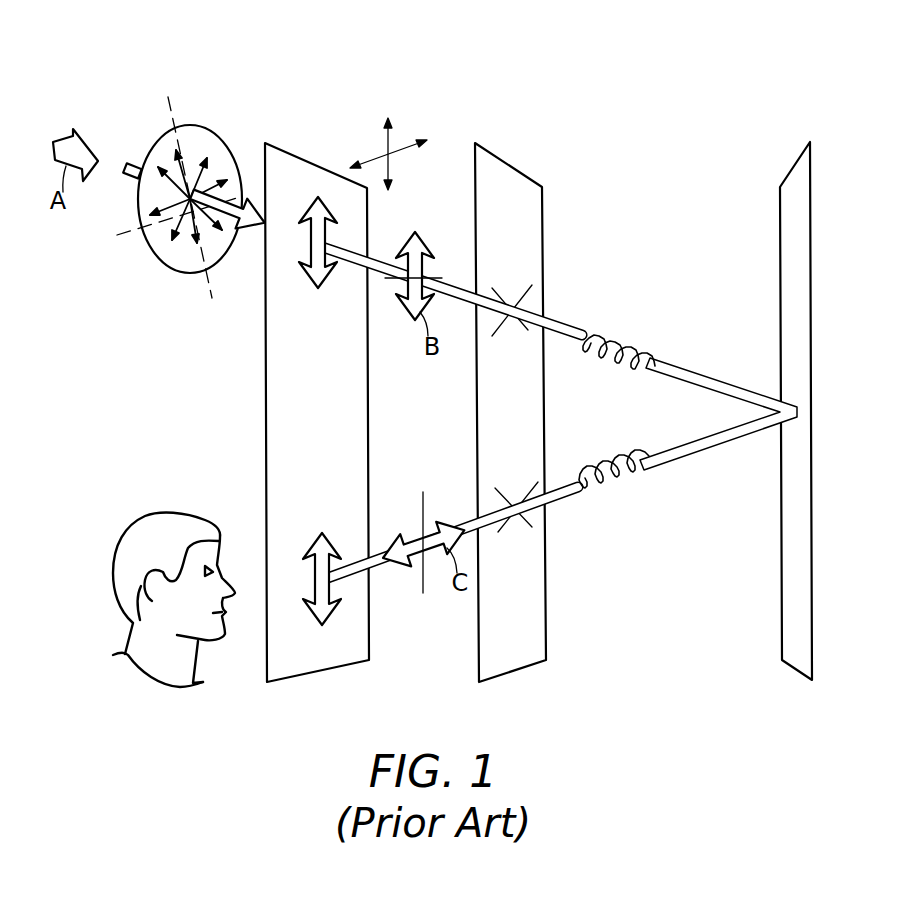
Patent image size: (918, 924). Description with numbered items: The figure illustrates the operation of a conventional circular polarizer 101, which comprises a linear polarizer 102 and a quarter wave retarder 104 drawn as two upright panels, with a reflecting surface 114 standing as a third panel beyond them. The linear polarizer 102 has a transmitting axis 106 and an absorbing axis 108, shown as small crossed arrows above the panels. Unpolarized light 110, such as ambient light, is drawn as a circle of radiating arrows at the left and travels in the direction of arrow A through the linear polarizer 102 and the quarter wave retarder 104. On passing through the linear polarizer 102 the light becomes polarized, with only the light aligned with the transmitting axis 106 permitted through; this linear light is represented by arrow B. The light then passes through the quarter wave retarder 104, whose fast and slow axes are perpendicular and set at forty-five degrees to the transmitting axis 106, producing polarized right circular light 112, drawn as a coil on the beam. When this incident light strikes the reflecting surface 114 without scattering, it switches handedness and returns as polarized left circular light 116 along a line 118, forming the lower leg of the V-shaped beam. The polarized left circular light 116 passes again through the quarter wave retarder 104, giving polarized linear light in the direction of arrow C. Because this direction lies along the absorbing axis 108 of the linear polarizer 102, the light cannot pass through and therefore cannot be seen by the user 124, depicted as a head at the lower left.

The circular polarizer 101 is at (744, 80).
The linear polarizer 102 is at (327, 660).
The quarter wave retarder 104 is at (512, 660).
The transmitting axis 106 is at (392, 170).
The absorbing axis 108 is at (378, 163).
The unpolarized light 110 is at (213, 131).
The polarized right circular light 112 is at (618, 334).
The reflecting surface 114 is at (797, 662).
The polarized left circular light 116 is at (603, 490).
The line 118 is at (690, 458).
The user 124 is at (142, 530).